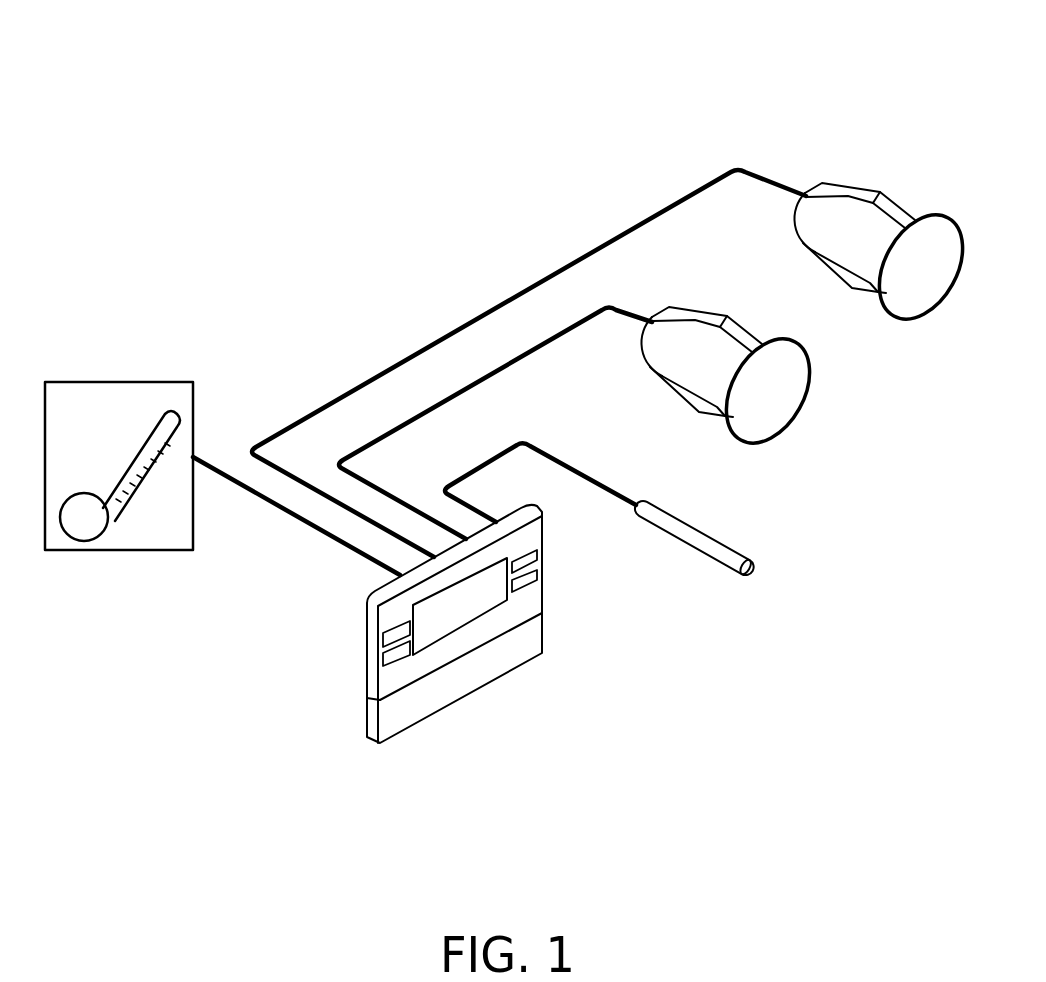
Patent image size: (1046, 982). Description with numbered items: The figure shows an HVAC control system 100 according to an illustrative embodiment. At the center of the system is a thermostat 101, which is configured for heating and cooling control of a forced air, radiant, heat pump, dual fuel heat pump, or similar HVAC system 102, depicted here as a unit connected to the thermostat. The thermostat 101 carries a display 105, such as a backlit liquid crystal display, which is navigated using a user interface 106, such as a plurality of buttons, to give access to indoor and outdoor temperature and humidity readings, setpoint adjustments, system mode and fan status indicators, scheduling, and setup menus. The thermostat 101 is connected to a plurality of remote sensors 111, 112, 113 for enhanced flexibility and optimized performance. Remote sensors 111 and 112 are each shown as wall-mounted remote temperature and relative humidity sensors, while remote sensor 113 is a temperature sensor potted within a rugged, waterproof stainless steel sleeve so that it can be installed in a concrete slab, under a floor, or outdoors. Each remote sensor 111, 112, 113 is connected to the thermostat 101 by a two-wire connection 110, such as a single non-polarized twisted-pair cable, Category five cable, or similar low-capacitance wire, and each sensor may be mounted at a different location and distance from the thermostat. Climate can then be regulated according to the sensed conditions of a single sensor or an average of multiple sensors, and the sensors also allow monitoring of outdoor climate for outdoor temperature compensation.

The HVAC control system 100 is at (557, 37).
The thermostat 101 is at (445, 635).
The HVAC system 102 is at (112, 382).
The display 105 is at (488, 603).
The user interface 106 is at (383, 637).
The two-wire connection 110 is at (555, 270).
The remote sensor 111 is at (832, 215).
The remote sensor 112 is at (678, 338).
The remote sensor 113 is at (708, 548).